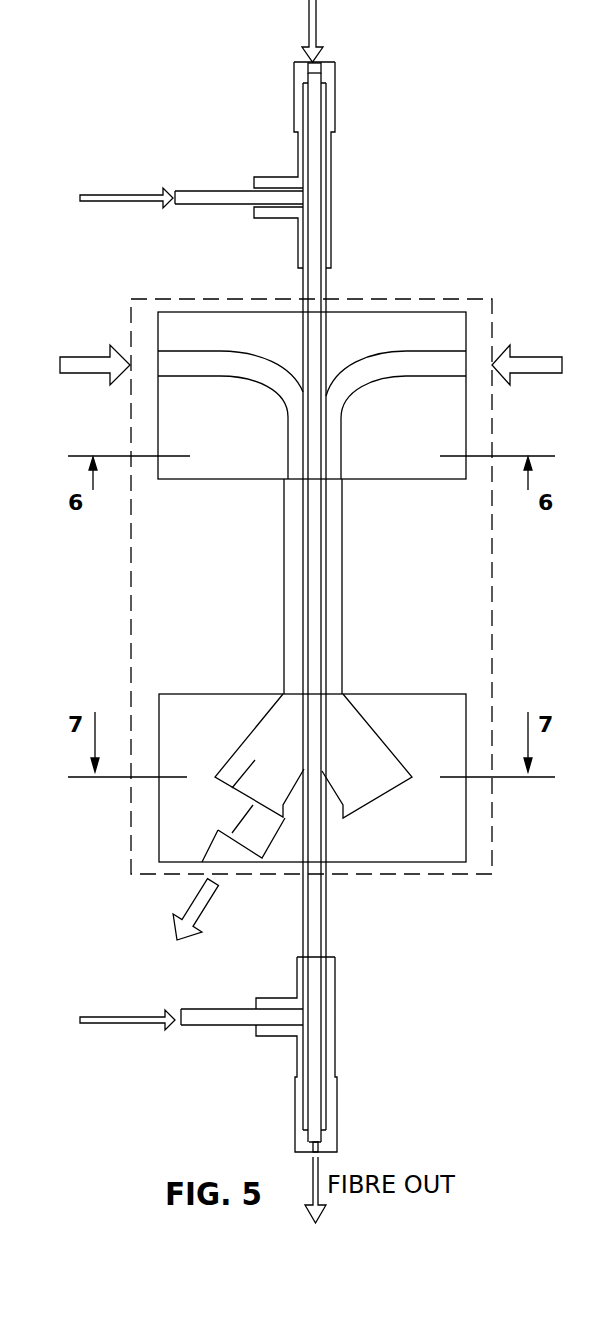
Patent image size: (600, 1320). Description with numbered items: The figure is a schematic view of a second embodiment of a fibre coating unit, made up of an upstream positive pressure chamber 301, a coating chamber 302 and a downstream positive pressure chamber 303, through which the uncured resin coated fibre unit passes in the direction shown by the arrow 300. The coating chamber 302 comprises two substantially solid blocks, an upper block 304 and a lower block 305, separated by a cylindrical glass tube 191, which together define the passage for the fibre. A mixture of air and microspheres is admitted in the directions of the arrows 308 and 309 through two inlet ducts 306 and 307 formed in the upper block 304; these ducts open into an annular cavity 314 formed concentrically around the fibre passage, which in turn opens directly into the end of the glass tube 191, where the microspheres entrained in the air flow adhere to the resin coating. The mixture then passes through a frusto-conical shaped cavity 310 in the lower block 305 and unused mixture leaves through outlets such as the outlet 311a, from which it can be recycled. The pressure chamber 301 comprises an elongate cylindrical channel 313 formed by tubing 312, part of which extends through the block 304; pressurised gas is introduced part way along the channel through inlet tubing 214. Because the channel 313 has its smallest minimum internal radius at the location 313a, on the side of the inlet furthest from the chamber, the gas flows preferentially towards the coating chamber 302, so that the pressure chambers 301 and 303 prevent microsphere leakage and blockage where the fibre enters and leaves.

The arrow 300 is at (309, 25).
The location of smaller minimum internal radius 313a is at (307, 70).
The positive pressure chamber 301 is at (270, 150).
The tubing 214 is at (246, 204).
The tubing 312 is at (323, 125).
The channel 313 is at (325, 359).
The coating chamber 302 is at (130, 299).
The upper block 304 is at (440, 318).
The inlet duct 306 is at (265, 383).
The inlet duct 307 is at (410, 368).
The annular cavity 314 is at (297, 465).
The arrow 308 is at (100, 363).
The arrow 309 is at (532, 365).
The cylindrical glass tube 191 is at (283, 588).
The lower block 305 is at (217, 710).
The frusto-conical shaped cavity 310 is at (232, 788).
The outlet 311a is at (235, 855).
The positive pressure chamber 303 is at (250, 1080).